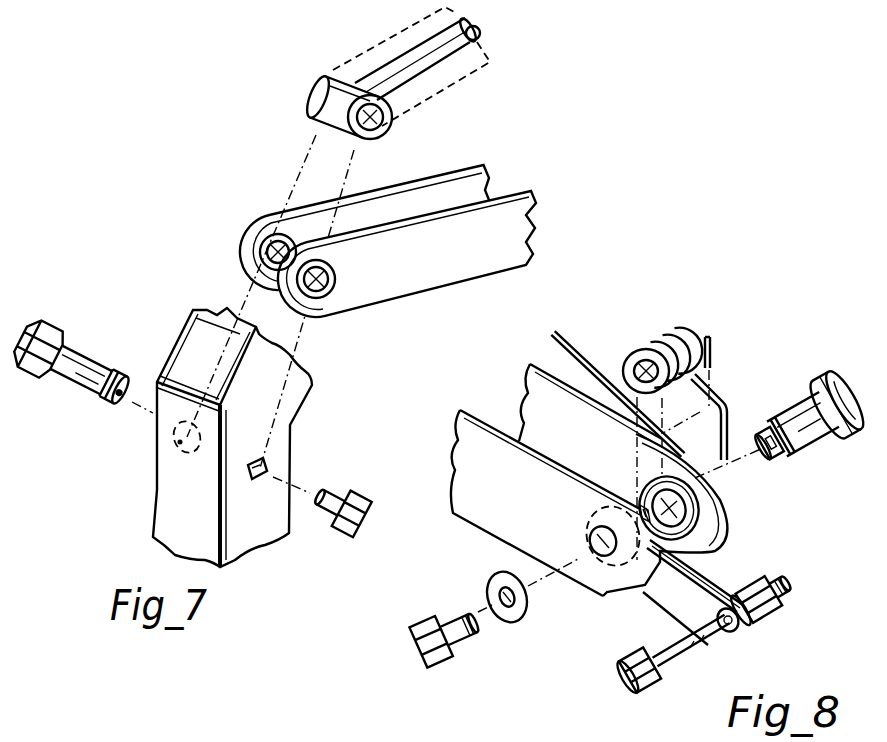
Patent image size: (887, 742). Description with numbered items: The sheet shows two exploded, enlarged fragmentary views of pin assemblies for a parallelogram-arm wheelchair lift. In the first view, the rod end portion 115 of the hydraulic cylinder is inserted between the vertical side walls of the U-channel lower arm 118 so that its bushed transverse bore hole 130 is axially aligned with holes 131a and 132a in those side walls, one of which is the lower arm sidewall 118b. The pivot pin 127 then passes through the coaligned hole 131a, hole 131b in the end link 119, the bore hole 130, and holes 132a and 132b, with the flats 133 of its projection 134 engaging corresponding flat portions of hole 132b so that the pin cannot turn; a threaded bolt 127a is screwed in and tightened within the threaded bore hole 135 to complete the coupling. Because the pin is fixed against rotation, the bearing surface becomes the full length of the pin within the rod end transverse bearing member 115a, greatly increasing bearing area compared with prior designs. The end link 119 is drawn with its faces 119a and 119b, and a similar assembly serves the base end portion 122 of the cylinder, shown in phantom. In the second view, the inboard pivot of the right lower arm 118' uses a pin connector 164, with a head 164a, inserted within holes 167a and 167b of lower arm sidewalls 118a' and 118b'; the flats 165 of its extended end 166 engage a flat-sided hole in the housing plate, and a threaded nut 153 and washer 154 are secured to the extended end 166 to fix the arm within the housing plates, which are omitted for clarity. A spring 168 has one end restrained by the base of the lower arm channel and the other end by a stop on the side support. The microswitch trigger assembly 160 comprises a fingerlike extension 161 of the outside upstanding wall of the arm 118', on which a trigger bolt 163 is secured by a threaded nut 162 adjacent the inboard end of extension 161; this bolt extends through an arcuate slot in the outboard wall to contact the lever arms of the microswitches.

In FIG. 7, the rod end portion 115 is at (477, 22).
In FIG. 7, the rod end transverse bearing member 115a is at (320, 100).
In FIG. 7, the base end portion 122 is at (361, 53).
In FIG. 7, the transverse bore hole 130 is at (382, 134).
In FIG. 7, the lower arm 118 is at (355, 245).
In FIG. 7, the lower arm sidewall 118b is at (407, 254).
In FIG. 7, the hole 131a is at (270, 257).
In FIG. 7, the hole 132a is at (326, 279).
In FIG. 7, the end link 119 is at (146, 503).
In FIG. 7, the top face of bracket 119a is at (228, 310).
In FIG. 7, the side face of bracket 119b is at (280, 517).
In FIG. 7, the hole 131b is at (185, 456).
In FIG. 7, the hole 132b is at (264, 467).
In FIG. 7, the pivot pin 127 is at (97, 340).
In FIG. 7, the threaded bolt 127a is at (344, 536).
In FIG. 7, the flats 133 is at (100, 397).
In FIG. 7, the projection 134 is at (138, 373).
In FIG. 7, the threaded bore hole 135 is at (120, 403).
In FIG. 8, the lower arm 118' is at (532, 480).
In FIG. 8, the lower arm sidewall 118a' is at (590, 406).
In FIG. 8, the lower arm sidewall 118b' is at (550, 503).
In FIG. 8, the microswitch trigger assembly 160 is at (724, 569).
In FIG. 8, the fingerlike extension 161 is at (680, 617).
In FIG. 8, the threaded nut 162 is at (775, 618).
In FIG. 8, the trigger bolt 163 is at (684, 657).
In FIG. 8, the pin connector 164 is at (821, 458).
In FIG. 8, the pin head 164a is at (847, 376).
In FIG. 8, the flats 165 is at (770, 428).
In FIG. 8, the extended end 166 is at (767, 460).
In FIG. 8, the hole 167a is at (718, 532).
In FIG. 8, the hole 167b is at (588, 540).
In FIG. 8, the spring 168 is at (647, 341).
In FIG. 8, the threaded nut 153 is at (444, 666).
In FIG. 8, the washer 154 is at (512, 621).